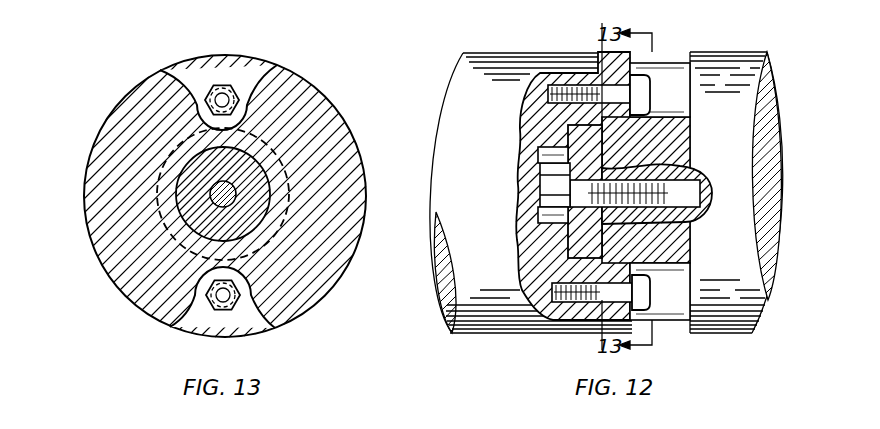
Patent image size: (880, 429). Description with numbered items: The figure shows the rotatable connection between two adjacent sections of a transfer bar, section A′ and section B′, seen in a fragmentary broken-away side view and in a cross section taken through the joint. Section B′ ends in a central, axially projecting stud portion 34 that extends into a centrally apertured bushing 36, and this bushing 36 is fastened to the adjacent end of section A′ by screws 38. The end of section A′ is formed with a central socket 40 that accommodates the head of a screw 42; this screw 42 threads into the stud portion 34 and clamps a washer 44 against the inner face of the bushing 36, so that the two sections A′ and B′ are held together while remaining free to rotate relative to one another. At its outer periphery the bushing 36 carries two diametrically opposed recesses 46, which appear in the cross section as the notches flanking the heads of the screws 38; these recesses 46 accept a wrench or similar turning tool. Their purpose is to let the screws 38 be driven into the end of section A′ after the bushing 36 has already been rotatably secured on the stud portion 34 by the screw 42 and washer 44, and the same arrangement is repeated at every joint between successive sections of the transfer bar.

In FIG. 13, the stud portion 34 is at (257, 205).
In FIG. 12, the stud portion 34 is at (683, 158).
In FIG. 13, the bushing 36 is at (323, 287).
In FIG. 12, the bushing 36 is at (682, 250).
In FIG. 13, the screws 38 is at (224, 90).
In FIG. 12, the screws 38 is at (646, 94).
In FIG. 12, the socket 40 is at (538, 183).
In FIG. 13, the screw 42 is at (233, 182).
In FIG. 12, the screw 42 is at (547, 222).
In FIG. 13, the washer 44 is at (160, 212).
In FIG. 12, the washer 44 is at (577, 137).
In FIG. 13, the recesses 46 is at (255, 70).
In FIG. 12, the recesses 46 is at (667, 67).
In FIG. 12, the transfer bar section A' is at (531, 214).
In FIG. 12, the transfer bar section B' is at (748, 192).